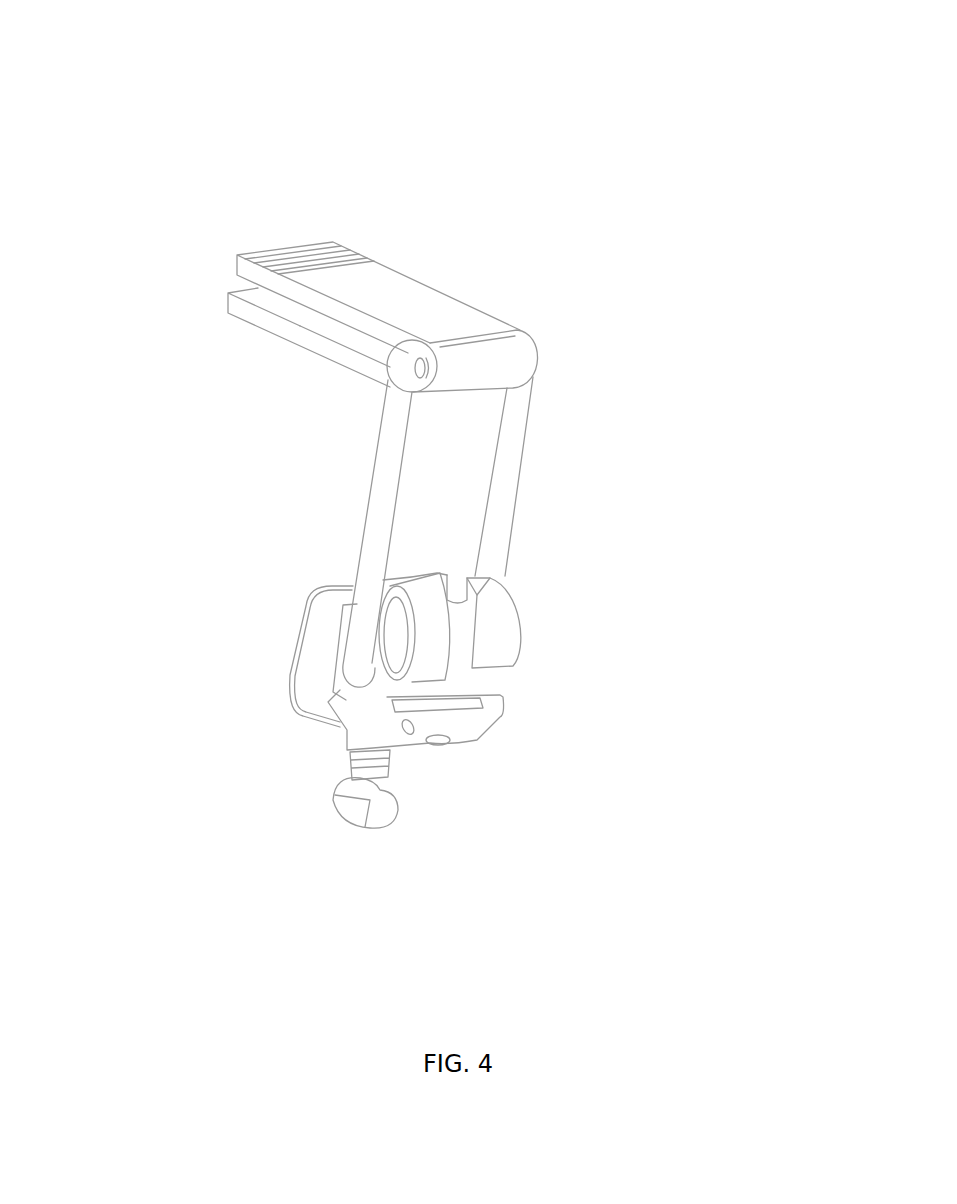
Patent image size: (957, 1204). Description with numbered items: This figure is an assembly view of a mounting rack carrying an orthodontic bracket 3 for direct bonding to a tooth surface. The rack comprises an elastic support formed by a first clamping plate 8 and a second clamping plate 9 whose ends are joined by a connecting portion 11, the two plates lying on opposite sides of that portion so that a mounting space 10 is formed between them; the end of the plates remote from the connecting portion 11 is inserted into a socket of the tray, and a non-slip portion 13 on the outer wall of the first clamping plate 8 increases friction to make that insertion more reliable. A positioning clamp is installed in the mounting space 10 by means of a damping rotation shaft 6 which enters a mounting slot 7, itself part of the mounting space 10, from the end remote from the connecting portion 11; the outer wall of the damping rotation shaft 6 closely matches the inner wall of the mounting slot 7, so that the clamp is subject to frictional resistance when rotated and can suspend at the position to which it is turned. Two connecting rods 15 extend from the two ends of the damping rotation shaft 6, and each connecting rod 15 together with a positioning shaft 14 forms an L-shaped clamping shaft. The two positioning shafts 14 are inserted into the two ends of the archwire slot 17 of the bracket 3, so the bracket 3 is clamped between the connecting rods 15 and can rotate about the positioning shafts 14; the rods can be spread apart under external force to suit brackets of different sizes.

The bracket 3 is at (502, 634).
The damping rotation shaft 6 is at (417, 366).
The mounting slot 7 is at (437, 378).
The first clamping plate 8 is at (375, 287).
The second clamping plate 9 is at (304, 338).
The mounting space 10 is at (284, 318).
The connecting portion 11 is at (508, 367).
The non-slip portion 13 is at (298, 255).
The positioning shaft 14 is at (458, 677).
The connecting rod 15 is at (522, 478).
The archwire slot 17 is at (422, 690).